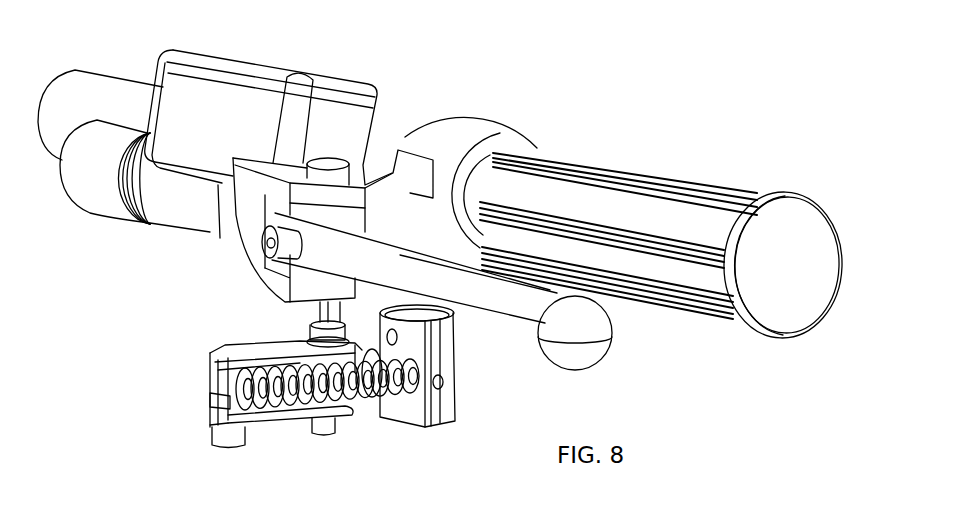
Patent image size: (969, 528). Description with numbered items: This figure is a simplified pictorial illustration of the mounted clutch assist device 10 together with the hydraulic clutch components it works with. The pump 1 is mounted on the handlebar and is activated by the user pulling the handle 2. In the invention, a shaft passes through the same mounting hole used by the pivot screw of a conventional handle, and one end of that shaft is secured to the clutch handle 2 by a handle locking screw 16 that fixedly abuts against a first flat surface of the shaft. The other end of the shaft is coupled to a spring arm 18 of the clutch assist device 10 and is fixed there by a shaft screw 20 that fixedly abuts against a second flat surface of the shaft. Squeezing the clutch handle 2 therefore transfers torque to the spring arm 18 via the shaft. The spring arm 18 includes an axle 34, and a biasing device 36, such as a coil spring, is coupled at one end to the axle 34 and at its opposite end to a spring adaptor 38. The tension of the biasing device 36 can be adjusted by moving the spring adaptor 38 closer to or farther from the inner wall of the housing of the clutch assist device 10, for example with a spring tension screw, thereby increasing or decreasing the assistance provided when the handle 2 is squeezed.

The pump 1 is at (326, 90).
The handle 2 is at (597, 347).
The clutch assist device 10 is at (427, 452).
The handle locking screw 16 is at (262, 242).
The spring arm 18 is at (207, 360).
The shaft screw 20 is at (362, 366).
The axle 34 is at (225, 410).
The biasing device 36 is at (288, 395).
The spring adaptor 38 is at (448, 395).